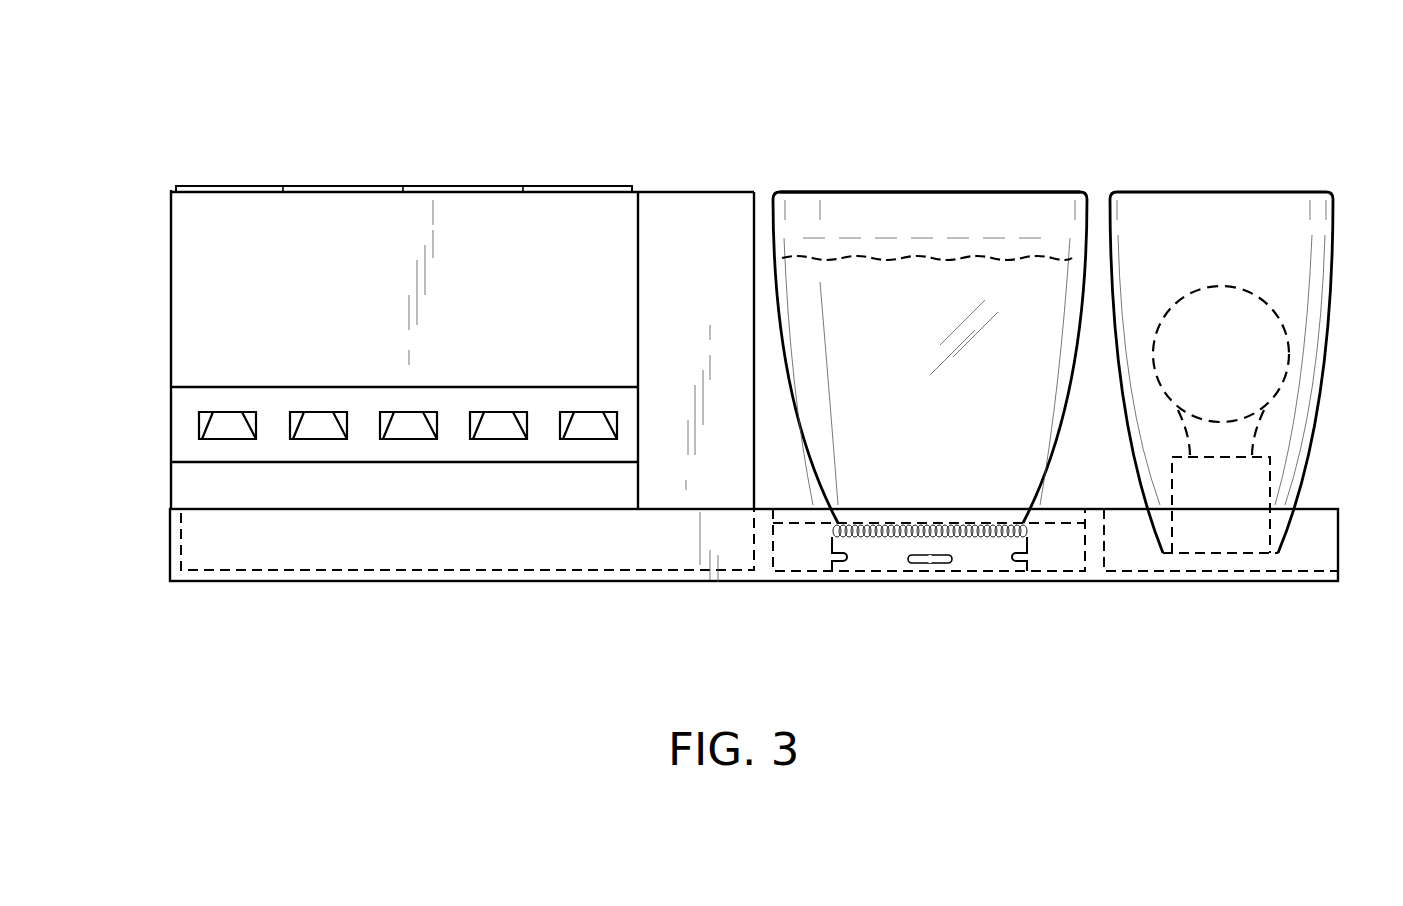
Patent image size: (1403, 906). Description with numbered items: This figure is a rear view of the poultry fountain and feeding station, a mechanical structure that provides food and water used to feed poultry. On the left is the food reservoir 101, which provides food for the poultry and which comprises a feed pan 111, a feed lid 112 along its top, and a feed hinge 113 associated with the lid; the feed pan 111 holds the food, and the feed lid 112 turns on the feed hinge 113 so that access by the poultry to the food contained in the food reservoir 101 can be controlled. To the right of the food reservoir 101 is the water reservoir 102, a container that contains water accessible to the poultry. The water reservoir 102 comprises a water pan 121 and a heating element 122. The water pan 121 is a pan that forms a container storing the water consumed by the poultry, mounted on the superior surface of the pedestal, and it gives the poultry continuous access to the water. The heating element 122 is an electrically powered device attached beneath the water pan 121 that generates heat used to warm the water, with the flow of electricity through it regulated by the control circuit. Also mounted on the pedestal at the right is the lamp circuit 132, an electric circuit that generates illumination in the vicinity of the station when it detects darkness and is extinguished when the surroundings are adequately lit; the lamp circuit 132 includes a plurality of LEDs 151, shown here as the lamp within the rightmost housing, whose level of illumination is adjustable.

The food reservoir 101 is at (162, 165).
The water reservoir 102 is at (909, 160).
The feed pan 111 is at (501, 247).
The feed lid 112 is at (221, 186).
The feed hinge 113 is at (298, 186).
The water pan 121 is at (956, 212).
The heating element 122 is at (980, 533).
The lamp circuit 132 is at (1237, 533).
The plurality of LEDs 151 is at (1250, 481).